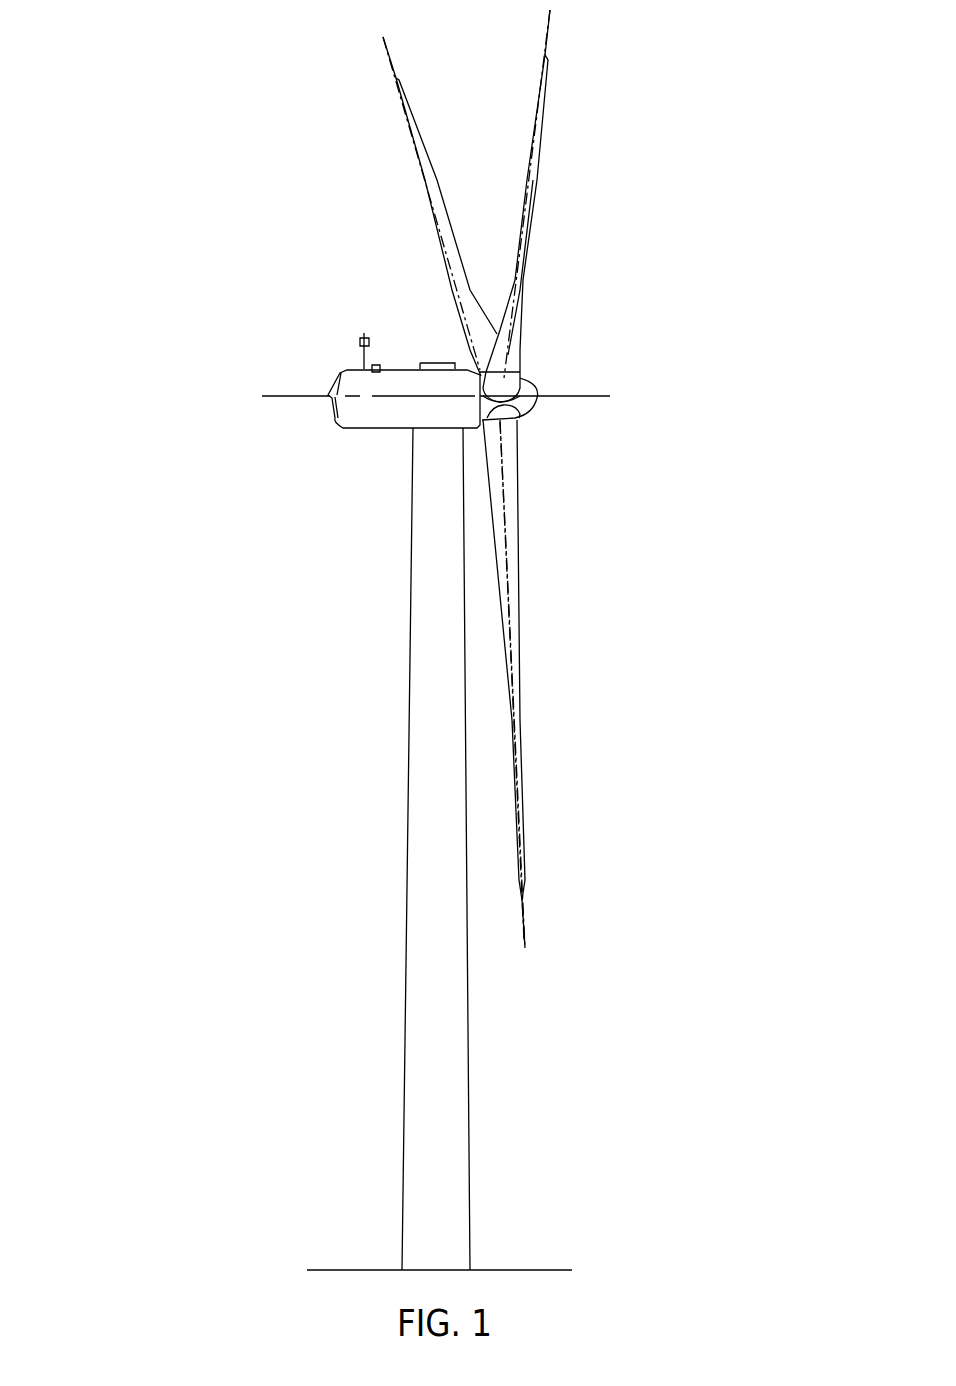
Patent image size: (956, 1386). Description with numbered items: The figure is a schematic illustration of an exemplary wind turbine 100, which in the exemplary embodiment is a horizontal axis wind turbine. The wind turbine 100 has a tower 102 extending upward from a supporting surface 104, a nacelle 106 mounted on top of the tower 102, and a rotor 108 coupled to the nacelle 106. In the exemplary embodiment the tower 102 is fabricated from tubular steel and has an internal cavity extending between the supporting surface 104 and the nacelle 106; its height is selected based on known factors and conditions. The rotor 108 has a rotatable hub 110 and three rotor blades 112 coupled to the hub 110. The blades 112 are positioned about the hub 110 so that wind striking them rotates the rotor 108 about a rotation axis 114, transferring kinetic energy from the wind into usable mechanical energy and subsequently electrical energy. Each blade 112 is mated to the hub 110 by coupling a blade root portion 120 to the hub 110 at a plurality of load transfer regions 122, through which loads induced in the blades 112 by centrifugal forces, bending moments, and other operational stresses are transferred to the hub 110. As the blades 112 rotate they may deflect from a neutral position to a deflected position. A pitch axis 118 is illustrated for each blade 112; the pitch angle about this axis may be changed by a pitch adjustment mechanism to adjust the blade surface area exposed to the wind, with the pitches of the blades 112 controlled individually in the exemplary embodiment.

The wind turbine 100 is at (193, 213).
The tower 102 is at (405, 1008).
The supporting surface 104 is at (358, 1270).
The nacelle 106 is at (370, 428).
The rotor 108 is at (543, 270).
The rotatable hub 110 is at (528, 385).
The rotor blades 112 is at (435, 160).
The rotation axis 114 is at (608, 393).
The pitch axis 118 is at (385, 42).
The blade root portion 120 is at (513, 511).
The load transfer regions 122 is at (512, 421).